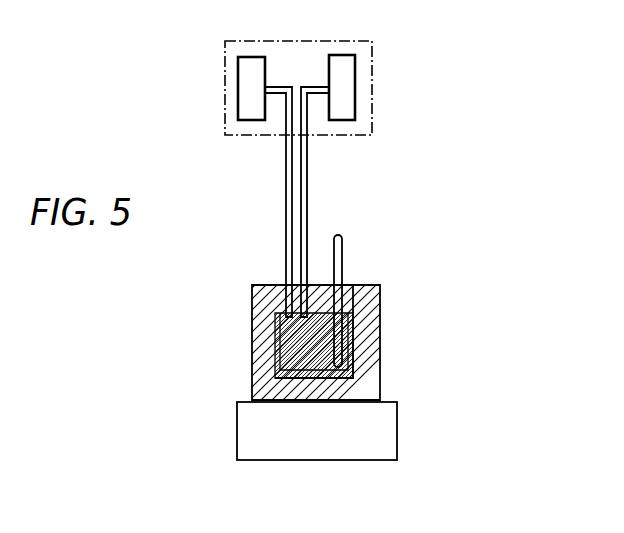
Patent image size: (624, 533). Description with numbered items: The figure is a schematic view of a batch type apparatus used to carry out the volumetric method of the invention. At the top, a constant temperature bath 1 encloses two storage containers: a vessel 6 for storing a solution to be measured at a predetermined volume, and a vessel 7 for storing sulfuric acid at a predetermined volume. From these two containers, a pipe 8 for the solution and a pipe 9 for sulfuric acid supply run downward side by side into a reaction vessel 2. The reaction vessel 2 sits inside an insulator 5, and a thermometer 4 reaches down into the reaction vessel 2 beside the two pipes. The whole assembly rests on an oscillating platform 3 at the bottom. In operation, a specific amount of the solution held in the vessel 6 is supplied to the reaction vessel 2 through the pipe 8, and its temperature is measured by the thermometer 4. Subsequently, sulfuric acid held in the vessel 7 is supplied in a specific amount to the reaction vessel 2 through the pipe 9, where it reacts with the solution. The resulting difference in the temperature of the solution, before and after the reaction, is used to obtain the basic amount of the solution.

The constant temperature bath 1 is at (372, 70).
The reaction vessel 2 is at (290, 335).
The oscillating platform 3 is at (390, 422).
The thermometer 4 is at (342, 258).
The insulator 5 is at (380, 330).
The vessel for storing a solution to be measured at a predetermined volume 6 is at (247, 121).
The vessel for storing sulfuric acid at a predetermined volume 7 is at (355, 92).
The pipe for the solution 8 is at (285, 230).
The pipe for sulfuric acid supply 9 is at (307, 170).